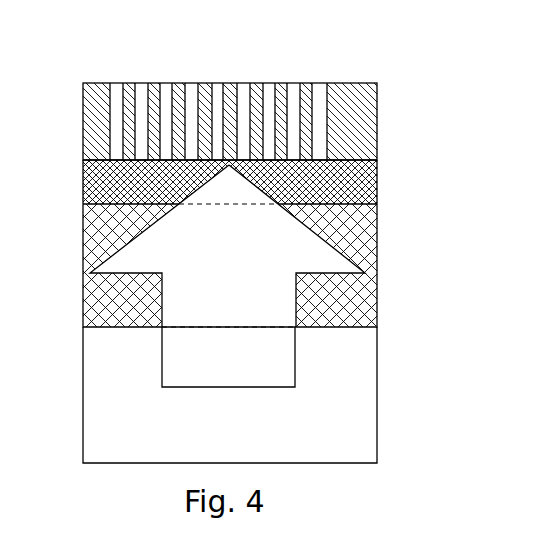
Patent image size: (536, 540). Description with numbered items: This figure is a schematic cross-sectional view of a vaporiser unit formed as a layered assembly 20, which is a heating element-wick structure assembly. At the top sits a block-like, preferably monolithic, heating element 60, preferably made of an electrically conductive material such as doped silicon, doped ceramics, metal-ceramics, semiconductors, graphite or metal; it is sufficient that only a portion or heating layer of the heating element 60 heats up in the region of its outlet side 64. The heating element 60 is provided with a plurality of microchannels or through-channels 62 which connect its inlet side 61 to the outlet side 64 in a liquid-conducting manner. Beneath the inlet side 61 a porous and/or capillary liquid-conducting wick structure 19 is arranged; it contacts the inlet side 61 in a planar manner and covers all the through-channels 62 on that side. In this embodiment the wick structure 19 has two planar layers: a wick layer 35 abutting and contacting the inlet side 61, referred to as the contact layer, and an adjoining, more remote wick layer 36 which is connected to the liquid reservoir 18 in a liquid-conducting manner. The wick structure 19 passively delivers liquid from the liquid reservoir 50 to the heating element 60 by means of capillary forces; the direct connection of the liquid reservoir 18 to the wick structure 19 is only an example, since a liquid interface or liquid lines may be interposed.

The liquid reservoir 18 is at (241, 431).
The liquid reservoir 50 is at (241, 365).
The wick structure 19 is at (75, 160).
The layered assembly 20 is at (398, 226).
The wick layer 36 is at (385, 203).
The wick layer 35 is at (432, 160).
The inlet side 61 is at (378, 172).
The heating element 60 is at (432, 85).
The through-channels 62 is at (240, 86).
The outlet side 64 is at (280, 87).